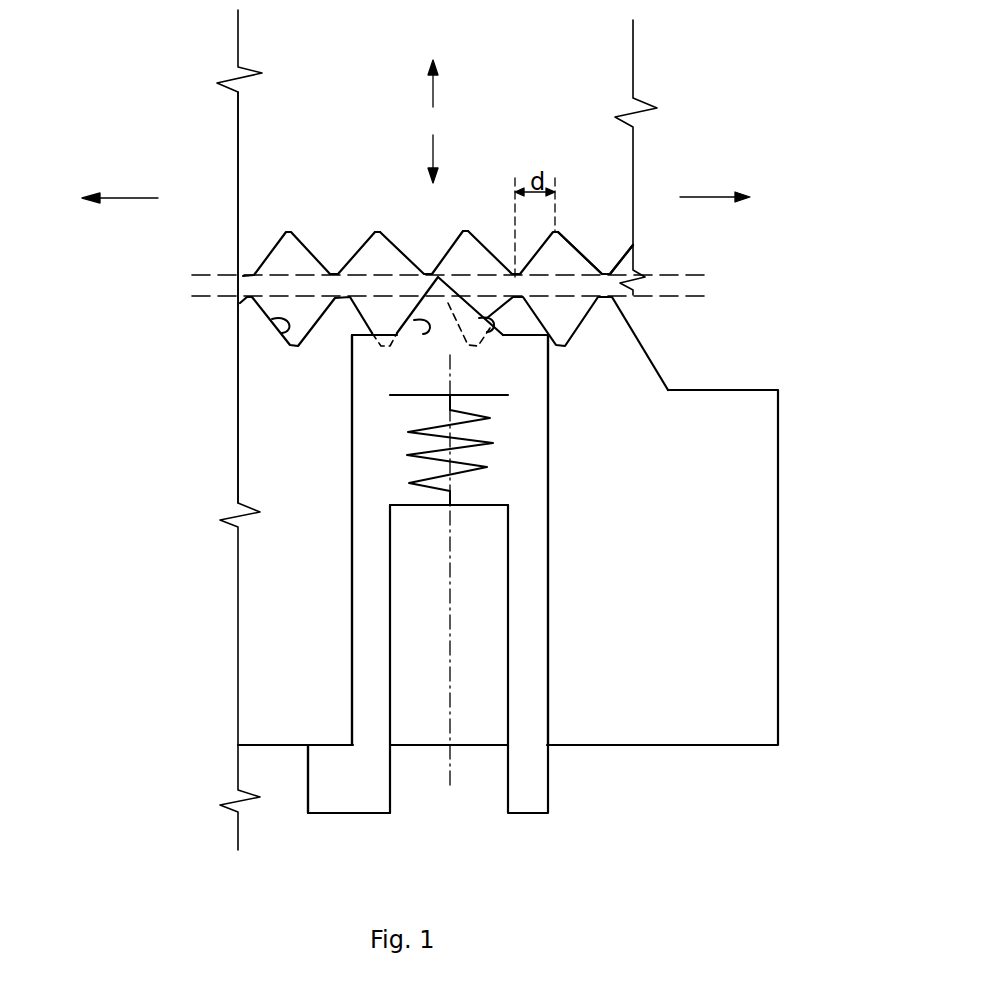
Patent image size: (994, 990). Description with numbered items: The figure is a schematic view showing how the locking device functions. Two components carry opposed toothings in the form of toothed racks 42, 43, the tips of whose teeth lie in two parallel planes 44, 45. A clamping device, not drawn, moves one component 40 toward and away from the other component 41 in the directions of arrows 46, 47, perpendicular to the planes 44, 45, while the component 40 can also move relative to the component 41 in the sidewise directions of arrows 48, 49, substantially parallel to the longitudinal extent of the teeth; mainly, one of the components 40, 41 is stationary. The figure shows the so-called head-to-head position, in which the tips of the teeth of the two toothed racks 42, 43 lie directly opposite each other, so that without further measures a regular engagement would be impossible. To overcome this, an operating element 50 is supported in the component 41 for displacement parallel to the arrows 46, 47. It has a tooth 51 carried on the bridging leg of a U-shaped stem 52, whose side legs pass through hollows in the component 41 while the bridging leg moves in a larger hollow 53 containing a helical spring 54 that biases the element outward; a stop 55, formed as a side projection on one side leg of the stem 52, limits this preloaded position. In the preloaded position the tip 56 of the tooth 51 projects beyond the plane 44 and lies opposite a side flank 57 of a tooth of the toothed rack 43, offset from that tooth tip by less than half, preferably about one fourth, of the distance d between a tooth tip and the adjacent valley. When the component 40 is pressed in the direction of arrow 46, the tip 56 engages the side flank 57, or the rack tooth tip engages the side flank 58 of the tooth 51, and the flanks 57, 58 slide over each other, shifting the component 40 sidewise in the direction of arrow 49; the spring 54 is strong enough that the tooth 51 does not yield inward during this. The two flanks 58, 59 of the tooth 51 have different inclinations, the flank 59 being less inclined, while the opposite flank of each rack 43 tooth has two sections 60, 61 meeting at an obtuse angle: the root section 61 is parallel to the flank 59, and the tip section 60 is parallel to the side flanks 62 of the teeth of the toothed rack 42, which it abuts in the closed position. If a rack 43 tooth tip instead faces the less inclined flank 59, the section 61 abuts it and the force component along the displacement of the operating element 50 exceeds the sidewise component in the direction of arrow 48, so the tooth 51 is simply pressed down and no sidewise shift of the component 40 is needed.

The component 40 is at (253, 197).
The component 41 is at (253, 478).
The toothed rack 42 is at (252, 328).
The toothed rack 43 is at (255, 243).
The plane 44 is at (210, 298).
The plane 45 is at (210, 277).
The arrow 46 is at (436, 158).
The arrow 47 is at (433, 82).
The arrow 48 is at (693, 195).
The arrow 49 is at (128, 197).
The operating element 50 is at (350, 418).
The tooth 51 is at (458, 307).
The stem 52 is at (525, 378).
The hollow 53 is at (493, 495).
The spring 54 is at (477, 467).
The stop 55 is at (328, 755).
The tip 56 is at (433, 280).
The side flank 57 is at (365, 237).
The side flank 58 is at (418, 322).
The side flank 59 is at (545, 363).
The section 60 is at (612, 243).
The section 61 is at (587, 263).
The side flank 62 is at (272, 336).